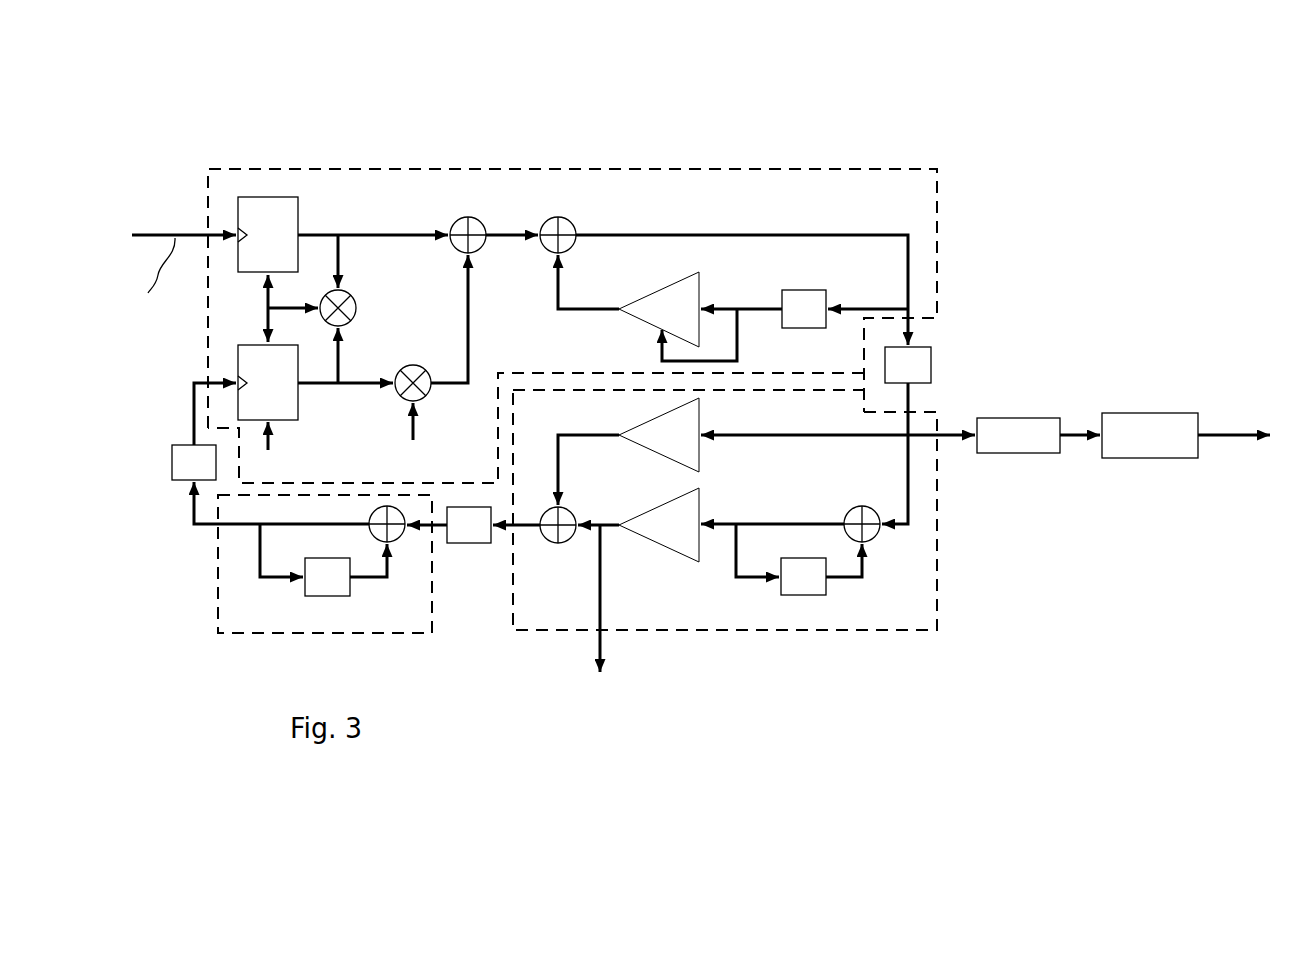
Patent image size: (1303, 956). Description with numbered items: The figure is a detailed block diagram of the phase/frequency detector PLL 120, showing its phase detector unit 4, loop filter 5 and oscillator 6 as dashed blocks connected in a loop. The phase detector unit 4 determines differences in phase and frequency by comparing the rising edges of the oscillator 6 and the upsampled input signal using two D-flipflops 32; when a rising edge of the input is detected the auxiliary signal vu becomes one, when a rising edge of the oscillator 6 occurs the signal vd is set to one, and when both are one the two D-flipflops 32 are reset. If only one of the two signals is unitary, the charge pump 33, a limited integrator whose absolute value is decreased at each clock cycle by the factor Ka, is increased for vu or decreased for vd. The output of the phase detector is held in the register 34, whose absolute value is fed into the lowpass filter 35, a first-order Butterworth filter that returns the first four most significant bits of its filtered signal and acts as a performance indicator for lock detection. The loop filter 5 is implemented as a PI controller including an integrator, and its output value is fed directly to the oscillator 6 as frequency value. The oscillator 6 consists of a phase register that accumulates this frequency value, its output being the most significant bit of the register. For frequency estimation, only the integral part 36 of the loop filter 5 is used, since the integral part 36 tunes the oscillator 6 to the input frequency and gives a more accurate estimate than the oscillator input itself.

The phase/frequency detector PLL 120 is at (902, 73).
The phase detector unit 4 is at (566, 313).
The loop filter 5 is at (727, 531).
The oscillator 6 is at (313, 572).
The D-flipflops 32 is at (256, 308).
The charge pump 33 is at (733, 308).
The register 34 is at (920, 376).
The lowpass filter 35 is at (1163, 449).
The integral part 36 is at (662, 538).